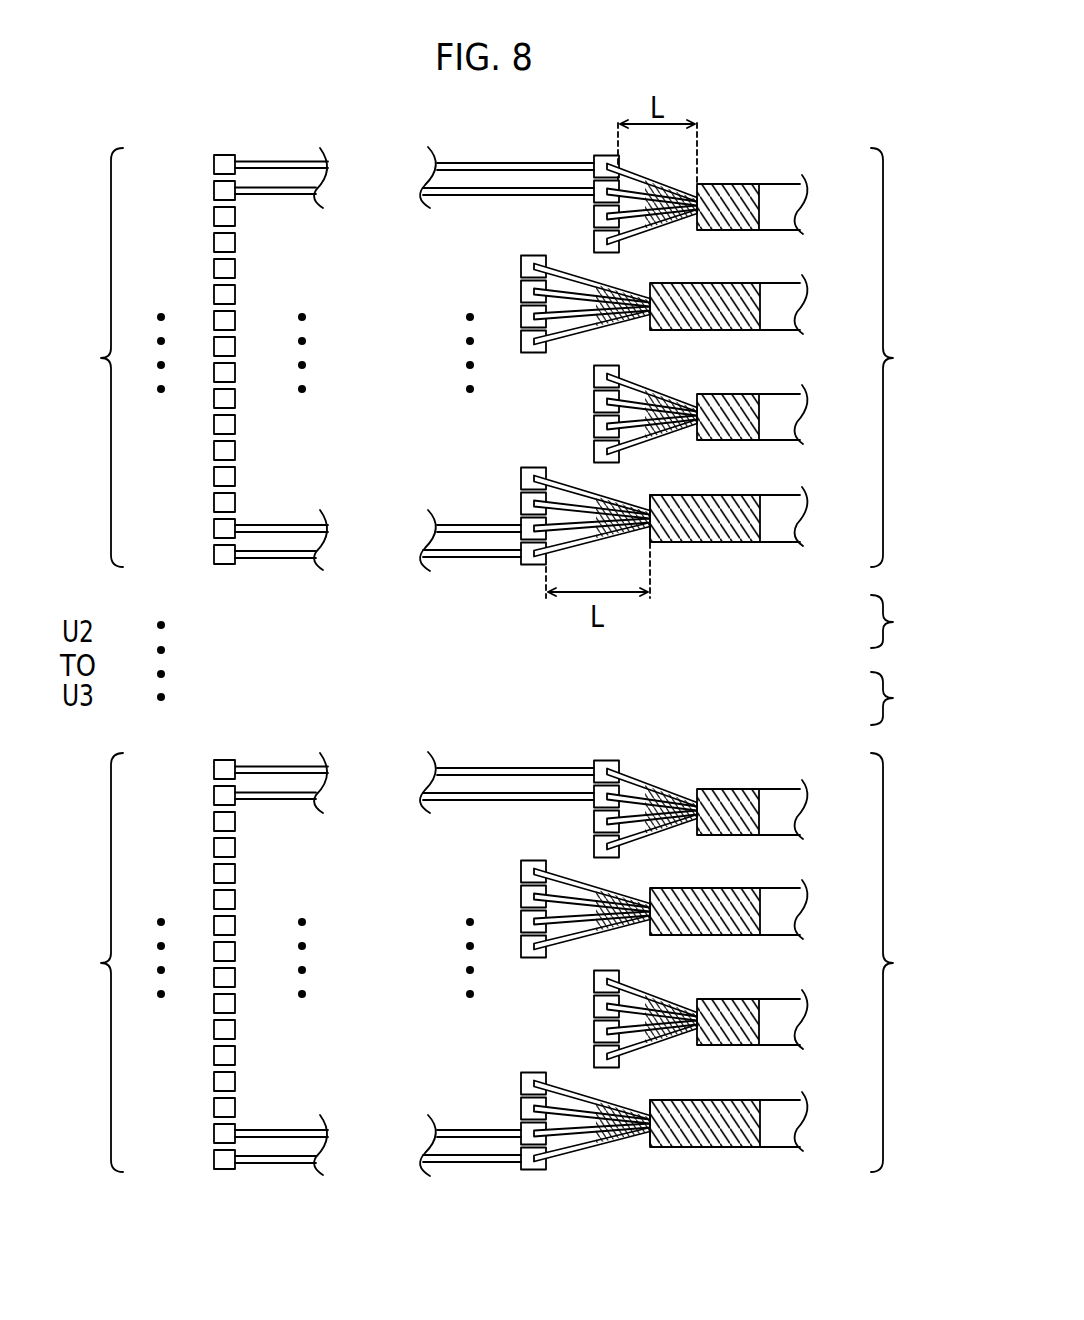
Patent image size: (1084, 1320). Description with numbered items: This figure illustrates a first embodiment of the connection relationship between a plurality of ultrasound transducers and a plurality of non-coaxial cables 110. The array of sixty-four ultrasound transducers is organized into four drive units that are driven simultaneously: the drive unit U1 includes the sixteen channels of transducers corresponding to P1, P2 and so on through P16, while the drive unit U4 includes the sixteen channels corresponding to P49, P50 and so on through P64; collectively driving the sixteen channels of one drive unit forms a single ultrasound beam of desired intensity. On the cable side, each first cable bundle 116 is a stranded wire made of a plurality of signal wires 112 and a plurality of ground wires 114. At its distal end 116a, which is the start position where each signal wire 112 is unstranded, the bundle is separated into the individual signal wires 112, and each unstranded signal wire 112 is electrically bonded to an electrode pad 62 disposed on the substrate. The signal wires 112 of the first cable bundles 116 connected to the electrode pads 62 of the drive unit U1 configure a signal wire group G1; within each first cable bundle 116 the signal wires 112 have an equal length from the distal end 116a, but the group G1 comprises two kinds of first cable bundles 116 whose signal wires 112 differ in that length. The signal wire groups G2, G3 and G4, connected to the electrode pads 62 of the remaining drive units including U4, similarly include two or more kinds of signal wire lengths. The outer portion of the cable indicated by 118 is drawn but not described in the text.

The ultrasound transducer P1 is at (214, 164).
The ultrasound transducer P2 is at (214, 190).
The ultrasound transducer P16 is at (214, 553).
The ultrasound transducer P49 is at (214, 769).
The ultrasound transducer P50 is at (214, 795).
The ultrasound transducer P64 is at (214, 1158).
The drive unit U1 is at (91, 357).
The drive unit U4 is at (92, 962).
The signal wire group G1 is at (904, 357).
The signal wire group G2 is at (904, 621).
The signal wire group G3 is at (904, 698).
The signal wire group G4 is at (904, 962).
The non-coaxial cable 110 is at (822, 137).
The signal wire 112 is at (577, 330).
The ground wire 114 is at (647, 284).
The first cable bundle 116 is at (744, 554).
The distal end 116a is at (651, 541).
The sheath 118 is at (783, 187).
The electrode pad 62 is at (521, 270).